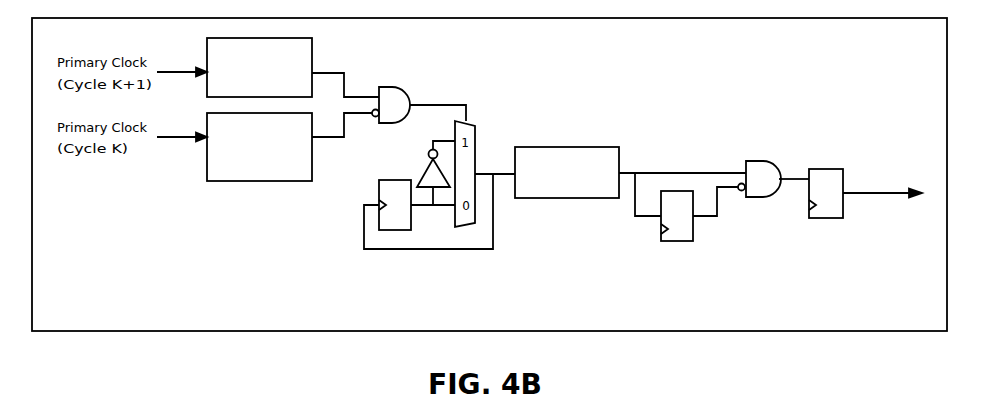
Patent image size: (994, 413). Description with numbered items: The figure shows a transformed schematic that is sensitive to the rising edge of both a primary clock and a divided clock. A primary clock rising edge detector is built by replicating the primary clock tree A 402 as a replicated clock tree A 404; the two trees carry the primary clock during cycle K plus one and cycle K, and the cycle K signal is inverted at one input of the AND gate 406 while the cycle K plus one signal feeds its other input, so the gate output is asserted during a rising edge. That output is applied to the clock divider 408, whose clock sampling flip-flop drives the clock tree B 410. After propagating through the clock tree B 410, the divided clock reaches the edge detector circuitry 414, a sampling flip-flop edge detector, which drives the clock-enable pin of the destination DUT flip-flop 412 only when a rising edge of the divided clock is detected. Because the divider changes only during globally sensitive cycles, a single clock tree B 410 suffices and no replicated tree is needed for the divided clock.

The primary clock tree A 402 is at (259, 67).
The replicated clock tree A 404 is at (259, 147).
The AND gate 406 is at (391, 105).
The clock divider 408 is at (424, 230).
The clock tree B 410 is at (567, 172).
The DUT flip-flop 412 is at (861, 217).
The edge detector circuitry 414 is at (705, 250).